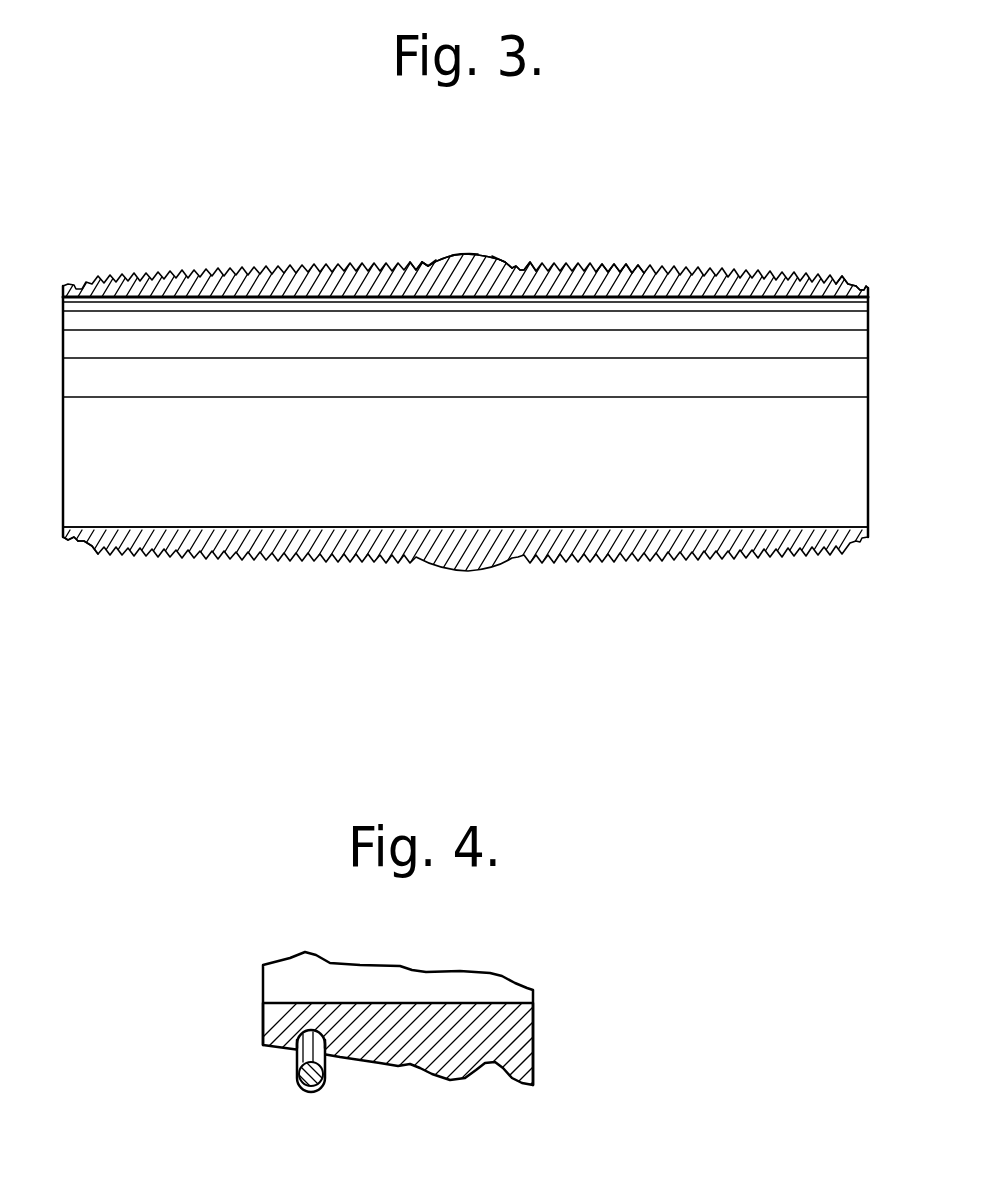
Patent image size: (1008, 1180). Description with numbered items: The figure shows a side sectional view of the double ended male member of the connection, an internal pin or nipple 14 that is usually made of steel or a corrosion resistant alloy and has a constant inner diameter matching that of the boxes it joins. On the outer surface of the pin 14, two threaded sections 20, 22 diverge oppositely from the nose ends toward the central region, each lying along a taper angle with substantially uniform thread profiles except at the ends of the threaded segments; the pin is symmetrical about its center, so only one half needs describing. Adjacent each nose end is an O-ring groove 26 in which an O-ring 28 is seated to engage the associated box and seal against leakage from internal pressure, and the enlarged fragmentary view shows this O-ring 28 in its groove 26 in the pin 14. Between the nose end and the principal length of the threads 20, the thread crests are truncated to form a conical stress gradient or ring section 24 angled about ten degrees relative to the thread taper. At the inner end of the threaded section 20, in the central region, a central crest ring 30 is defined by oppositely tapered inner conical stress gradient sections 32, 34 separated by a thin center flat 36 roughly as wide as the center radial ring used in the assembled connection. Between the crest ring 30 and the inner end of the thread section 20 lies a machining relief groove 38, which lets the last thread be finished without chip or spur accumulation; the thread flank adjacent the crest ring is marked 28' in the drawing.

In FIG. 3, the pin 14 is at (420, 580).
In FIG. 4, the pin 14 is at (447, 1003).
In FIG. 3, the threaded section 20 is at (305, 266).
In FIG. 3, the threaded section 22 is at (626, 268).
In FIG. 3, the conical stress gradient section 24 is at (842, 288).
In FIG. 3, the O-ring groove 26 is at (862, 290).
In FIG. 4, the O-ring groove 26 is at (298, 1048).
In FIG. 4, the O-ring 28 is at (335, 1085).
In FIG. 3, the thread flank adjacent boss 28' is at (565, 249).
In FIG. 3, the central crest ring 30 is at (463, 256).
In FIG. 3, the inner conical stress gradient section 32 is at (430, 262).
In FIG. 3, the inner conical stress gradient section 34 is at (508, 262).
In FIG. 3, the center flat 36 is at (486, 258).
In FIG. 3, the machining relief groove 38 is at (424, 266).